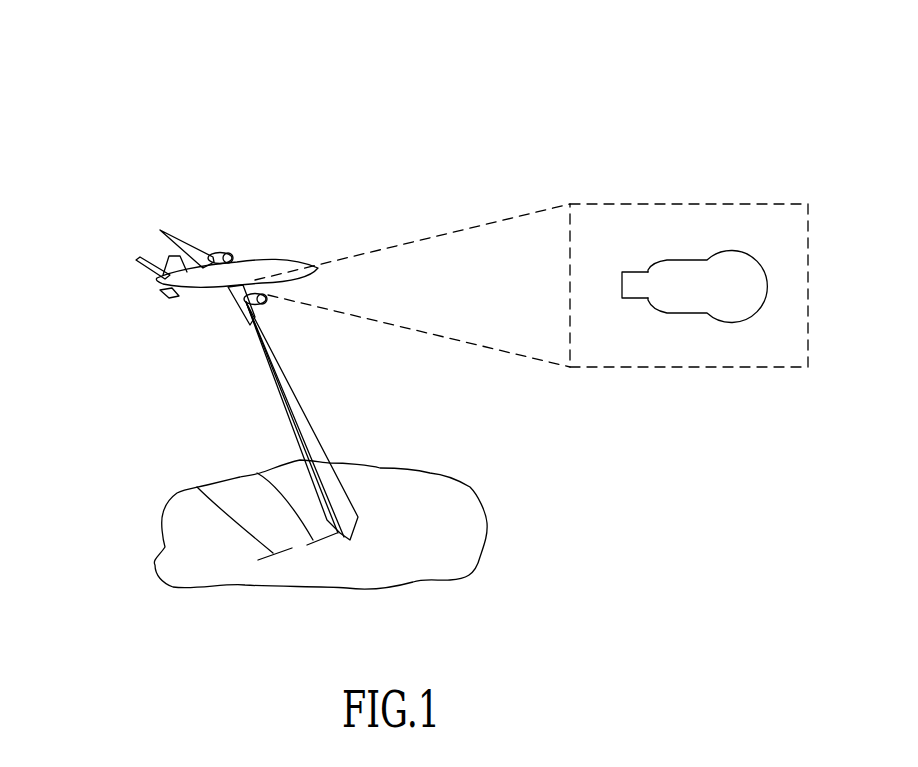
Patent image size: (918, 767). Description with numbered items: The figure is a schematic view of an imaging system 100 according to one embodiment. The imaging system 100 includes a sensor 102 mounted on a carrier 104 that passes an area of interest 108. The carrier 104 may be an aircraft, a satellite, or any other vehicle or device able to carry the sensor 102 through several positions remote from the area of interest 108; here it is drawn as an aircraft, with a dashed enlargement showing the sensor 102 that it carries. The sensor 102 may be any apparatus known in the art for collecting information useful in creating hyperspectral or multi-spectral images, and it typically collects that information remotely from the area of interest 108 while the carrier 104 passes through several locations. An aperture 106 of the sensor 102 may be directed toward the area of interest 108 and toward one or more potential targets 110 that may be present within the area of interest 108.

The imaging system 100 is at (165, 135).
The sensor 102 is at (753, 250).
The carrier 104 is at (268, 240).
The aperture 106 is at (622, 287).
The area of interest 108 is at (437, 508).
The potential targets 110 is at (257, 473).